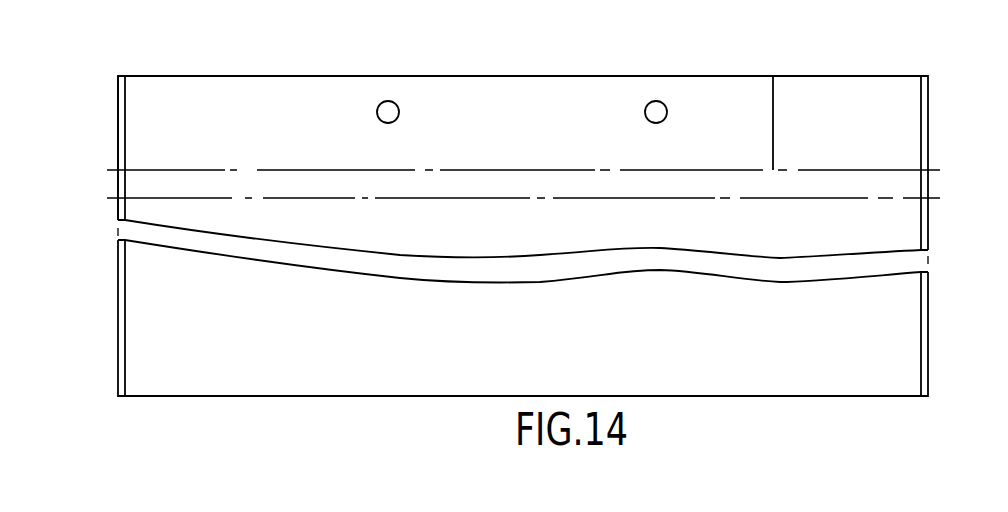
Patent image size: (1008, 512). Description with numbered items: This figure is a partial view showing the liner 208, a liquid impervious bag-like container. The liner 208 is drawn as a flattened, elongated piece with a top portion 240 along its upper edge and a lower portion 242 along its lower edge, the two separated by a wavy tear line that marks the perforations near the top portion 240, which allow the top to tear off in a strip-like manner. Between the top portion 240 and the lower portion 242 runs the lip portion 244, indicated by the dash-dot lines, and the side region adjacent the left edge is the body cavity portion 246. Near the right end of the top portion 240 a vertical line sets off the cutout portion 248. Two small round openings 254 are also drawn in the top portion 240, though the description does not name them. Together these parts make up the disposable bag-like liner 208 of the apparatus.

The liner 208 is at (282, 376).
The top portion 240 is at (287, 77).
The lower portion 242 is at (137, 292).
The lip portion 244 is at (145, 183).
The body cavity portion 246 is at (138, 112).
The cutout portion 248 is at (866, 98).
The mounting hole 254 is at (390, 100).